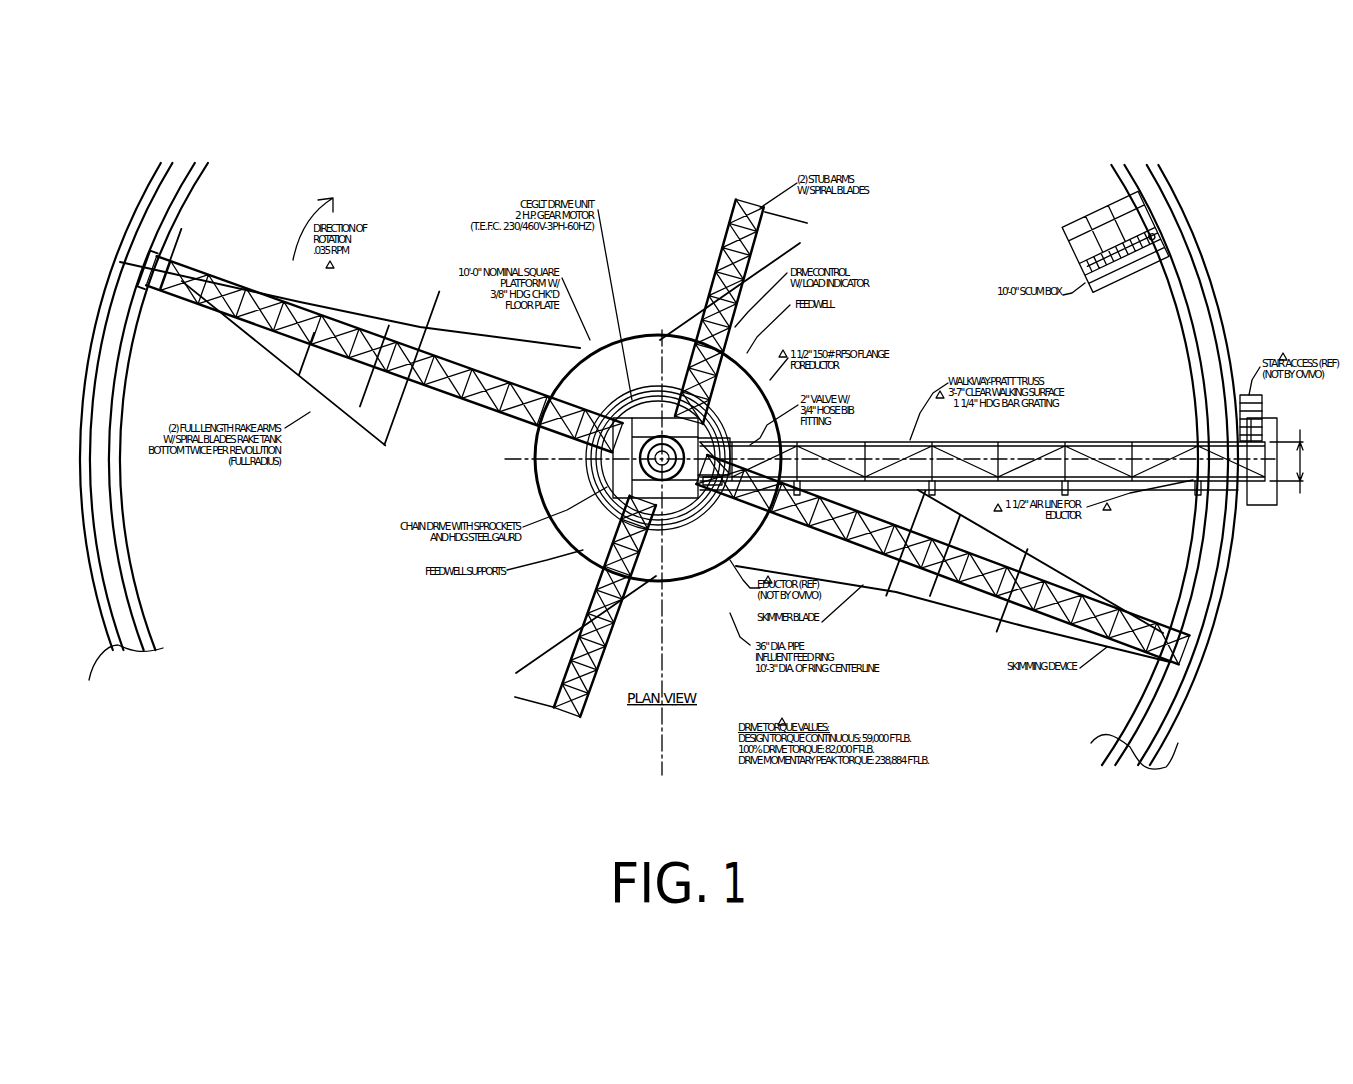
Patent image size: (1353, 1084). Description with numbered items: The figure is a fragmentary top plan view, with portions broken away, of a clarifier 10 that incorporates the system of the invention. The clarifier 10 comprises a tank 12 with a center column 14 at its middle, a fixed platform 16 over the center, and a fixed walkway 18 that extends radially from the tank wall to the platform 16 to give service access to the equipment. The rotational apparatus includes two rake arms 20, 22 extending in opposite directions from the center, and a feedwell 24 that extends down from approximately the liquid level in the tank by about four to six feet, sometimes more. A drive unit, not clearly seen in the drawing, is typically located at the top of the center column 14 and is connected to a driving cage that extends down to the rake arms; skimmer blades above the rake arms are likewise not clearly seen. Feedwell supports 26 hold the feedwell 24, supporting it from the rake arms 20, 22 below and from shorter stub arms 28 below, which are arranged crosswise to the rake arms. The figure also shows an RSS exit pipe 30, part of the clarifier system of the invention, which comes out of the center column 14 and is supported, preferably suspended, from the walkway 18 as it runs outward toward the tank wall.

The clarifier 10 is at (1223, 186).
The tank 12 is at (143, 610).
The center column 14 is at (638, 418).
The fixed platform 16 is at (575, 545).
The fixed walkway 18 is at (880, 441).
The rake arm 20 is at (1027, 552).
The rake arm 22 is at (355, 343).
The feedwell 24 is at (537, 490).
The feedwell supports 26 is at (580, 393).
The stub arms 28 is at (752, 267).
The RSS exit pipe 30 is at (580, 588).